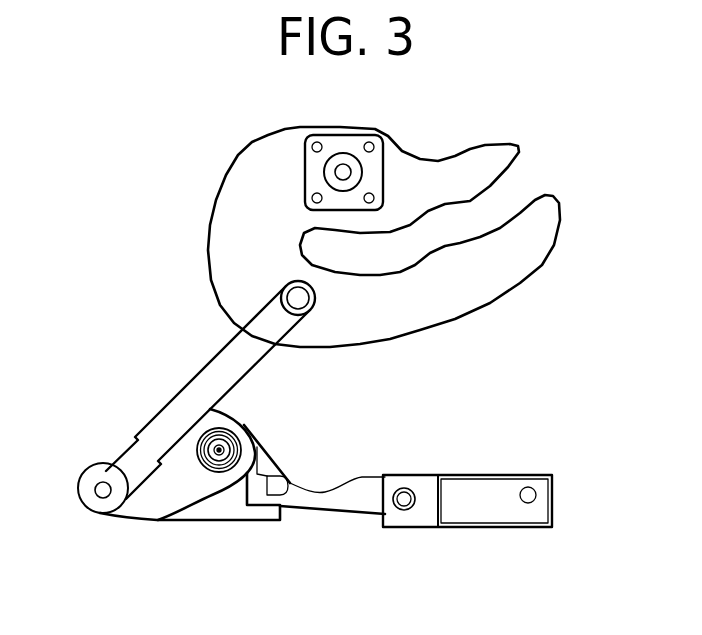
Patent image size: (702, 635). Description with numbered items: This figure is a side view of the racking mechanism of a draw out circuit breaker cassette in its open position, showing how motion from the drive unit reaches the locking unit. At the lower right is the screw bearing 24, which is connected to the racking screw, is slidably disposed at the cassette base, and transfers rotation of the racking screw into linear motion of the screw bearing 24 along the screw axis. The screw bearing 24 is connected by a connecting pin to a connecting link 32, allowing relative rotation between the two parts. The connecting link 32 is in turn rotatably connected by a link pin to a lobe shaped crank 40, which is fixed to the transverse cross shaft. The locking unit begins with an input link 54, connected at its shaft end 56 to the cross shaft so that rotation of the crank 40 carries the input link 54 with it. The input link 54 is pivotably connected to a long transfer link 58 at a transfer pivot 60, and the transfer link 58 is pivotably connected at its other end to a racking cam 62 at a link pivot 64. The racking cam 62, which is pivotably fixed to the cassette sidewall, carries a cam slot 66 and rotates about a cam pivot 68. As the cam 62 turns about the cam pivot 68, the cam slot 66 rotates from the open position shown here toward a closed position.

The screw bearing 24 is at (493, 490).
The connecting link 32 is at (348, 497).
The lobe shaped crank 40 is at (267, 470).
The input link 54 is at (147, 500).
The shaft end 56 is at (219, 452).
The transfer link 58 is at (207, 383).
The transfer pivot 60 is at (103, 488).
The racking cam 62 is at (237, 185).
The link pivot 64 is at (305, 303).
The cam slot 66 is at (527, 180).
The cam pivot 68 is at (343, 172).